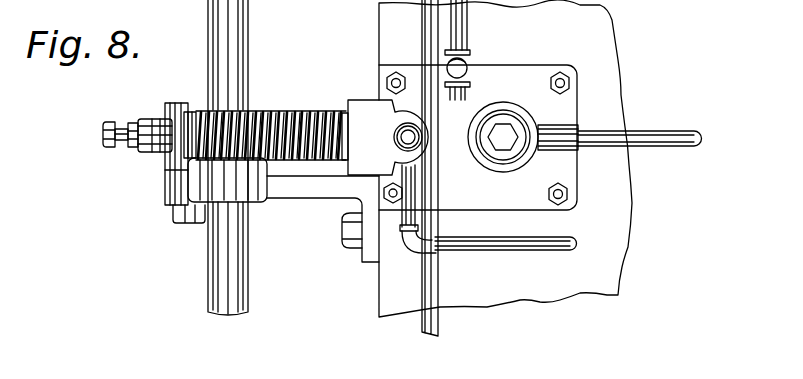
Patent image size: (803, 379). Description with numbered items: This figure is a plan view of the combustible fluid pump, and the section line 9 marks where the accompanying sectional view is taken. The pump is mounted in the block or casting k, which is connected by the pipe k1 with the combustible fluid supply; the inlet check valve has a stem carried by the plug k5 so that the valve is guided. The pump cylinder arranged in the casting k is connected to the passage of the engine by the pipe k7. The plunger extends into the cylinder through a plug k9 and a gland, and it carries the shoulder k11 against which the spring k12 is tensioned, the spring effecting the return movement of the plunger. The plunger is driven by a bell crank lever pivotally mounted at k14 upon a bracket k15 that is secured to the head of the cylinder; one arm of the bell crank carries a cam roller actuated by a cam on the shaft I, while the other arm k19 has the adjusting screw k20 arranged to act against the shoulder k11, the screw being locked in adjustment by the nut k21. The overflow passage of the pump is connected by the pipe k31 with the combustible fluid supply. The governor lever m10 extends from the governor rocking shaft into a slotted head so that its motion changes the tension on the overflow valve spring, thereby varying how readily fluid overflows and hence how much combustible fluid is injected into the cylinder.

The section line 9- 9 is at (393, 138).
The shaft I is at (240, 56).
The block or casting k is at (478, 137).
The pipe k1 is at (612, 132).
The plug k5 is at (505, 136).
The pipe k7 is at (464, 20).
The plug k9 is at (347, 108).
The shoulder k11 is at (190, 112).
The spring k12 is at (250, 115).
The pivot k14 is at (177, 206).
The bracket k15 is at (288, 187).
The arm k19 is at (143, 153).
The adjusting screw k20 is at (108, 126).
The nut k21 is at (133, 146).
The pipe k31 is at (478, 241).
The lever m10 is at (413, 137).